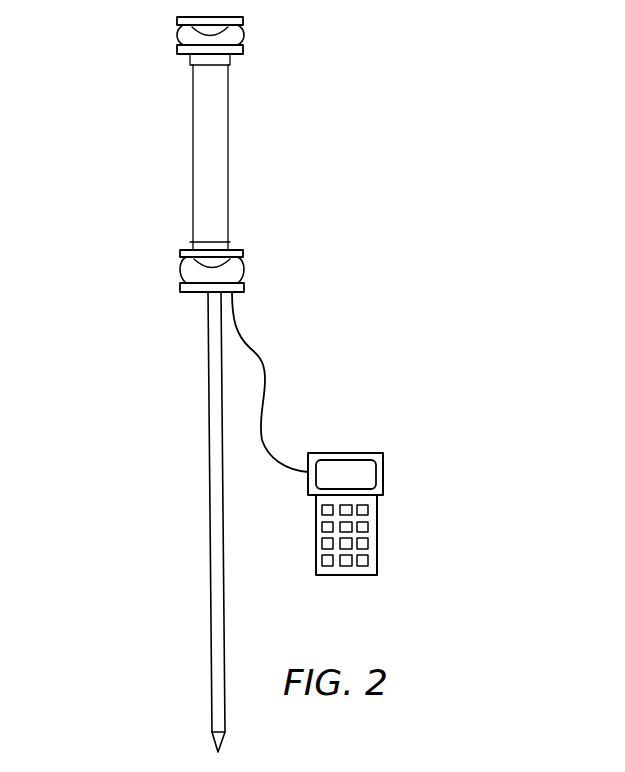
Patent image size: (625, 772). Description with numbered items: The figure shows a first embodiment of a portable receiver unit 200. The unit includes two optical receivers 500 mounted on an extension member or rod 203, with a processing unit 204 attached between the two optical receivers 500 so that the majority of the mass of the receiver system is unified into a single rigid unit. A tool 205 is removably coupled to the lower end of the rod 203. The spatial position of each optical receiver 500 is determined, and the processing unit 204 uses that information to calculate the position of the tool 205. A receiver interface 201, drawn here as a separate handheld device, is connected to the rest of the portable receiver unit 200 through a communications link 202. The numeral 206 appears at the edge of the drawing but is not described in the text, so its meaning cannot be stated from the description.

The portable receiver unit 200 is at (480, 293).
The receiver interface 201 is at (378, 512).
The communications link 202 is at (265, 363).
The extension member or rod 203 is at (208, 437).
The processing unit 204 is at (193, 132).
The tool 205 is at (212, 745).
The ground surface 206 is at (566, 771).
The optical receiver 500 is at (243, 50).